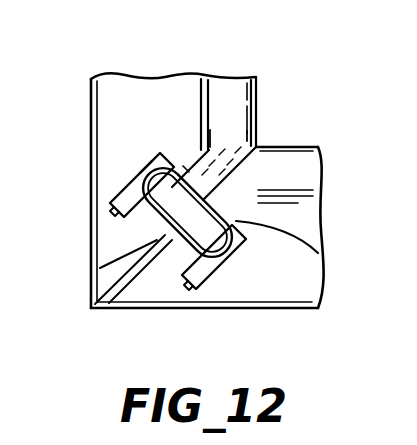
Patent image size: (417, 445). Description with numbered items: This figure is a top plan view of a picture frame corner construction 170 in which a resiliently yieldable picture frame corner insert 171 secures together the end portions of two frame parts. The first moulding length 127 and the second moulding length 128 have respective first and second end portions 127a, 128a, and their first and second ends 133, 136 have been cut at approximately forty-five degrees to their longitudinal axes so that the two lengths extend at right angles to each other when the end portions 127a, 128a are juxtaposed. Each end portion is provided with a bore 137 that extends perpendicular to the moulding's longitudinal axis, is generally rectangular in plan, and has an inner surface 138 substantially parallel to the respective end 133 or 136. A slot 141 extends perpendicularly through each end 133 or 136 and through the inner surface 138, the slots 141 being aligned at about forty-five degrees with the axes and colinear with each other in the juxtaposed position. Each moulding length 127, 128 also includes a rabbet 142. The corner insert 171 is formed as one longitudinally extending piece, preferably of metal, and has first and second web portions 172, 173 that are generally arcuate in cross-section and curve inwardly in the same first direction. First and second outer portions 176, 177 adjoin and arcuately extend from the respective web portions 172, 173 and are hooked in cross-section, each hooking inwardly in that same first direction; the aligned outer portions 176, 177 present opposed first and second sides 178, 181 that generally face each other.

The picture frame corner construction 170 is at (318, 88).
The second moulding length 128 is at (186, 74).
The second end portion 128a is at (92, 90).
The first moulding length 127 is at (325, 205).
The first end portion 127a is at (308, 310).
The second end 136 is at (264, 147).
The rabbet 142 is at (240, 86).
The first web portion 172 is at (248, 183).
The second web portion 173 is at (223, 150).
The second side 181 is at (185, 168).
The first outer portion 176 is at (224, 250).
The bore 137 is at (117, 194).
The inner surface 138 is at (116, 212).
The second outer portion 177 is at (145, 169).
The slot 141 is at (100, 268).
The first end 133 is at (97, 291).
The picture frame corner insert 171 is at (168, 247).
The first side 178 is at (324, 254).